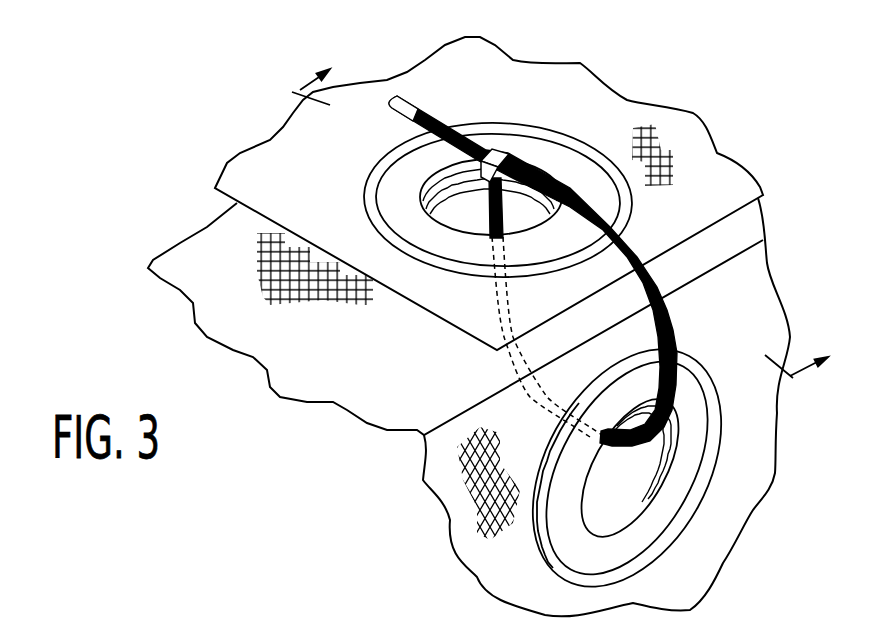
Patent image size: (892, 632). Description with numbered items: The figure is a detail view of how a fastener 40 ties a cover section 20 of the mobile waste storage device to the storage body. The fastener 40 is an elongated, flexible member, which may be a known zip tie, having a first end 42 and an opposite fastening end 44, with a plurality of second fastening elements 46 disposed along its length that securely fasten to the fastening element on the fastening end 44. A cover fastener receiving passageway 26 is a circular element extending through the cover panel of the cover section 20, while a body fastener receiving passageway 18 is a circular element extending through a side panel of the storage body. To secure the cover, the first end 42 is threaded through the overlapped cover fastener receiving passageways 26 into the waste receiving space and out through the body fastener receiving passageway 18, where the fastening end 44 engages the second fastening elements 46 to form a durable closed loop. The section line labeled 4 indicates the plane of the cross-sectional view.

The section line 4- 4 is at (569, 206).
The body fastener receiving passageway 18 is at (668, 522).
The cover section 20 is at (273, 134).
The cover fastener receiving passageway 26 is at (573, 150).
The fastener 40 is at (563, 229).
The first end 42 is at (402, 102).
The fastening end 44 is at (491, 149).
The second fastening element 46 is at (672, 315).